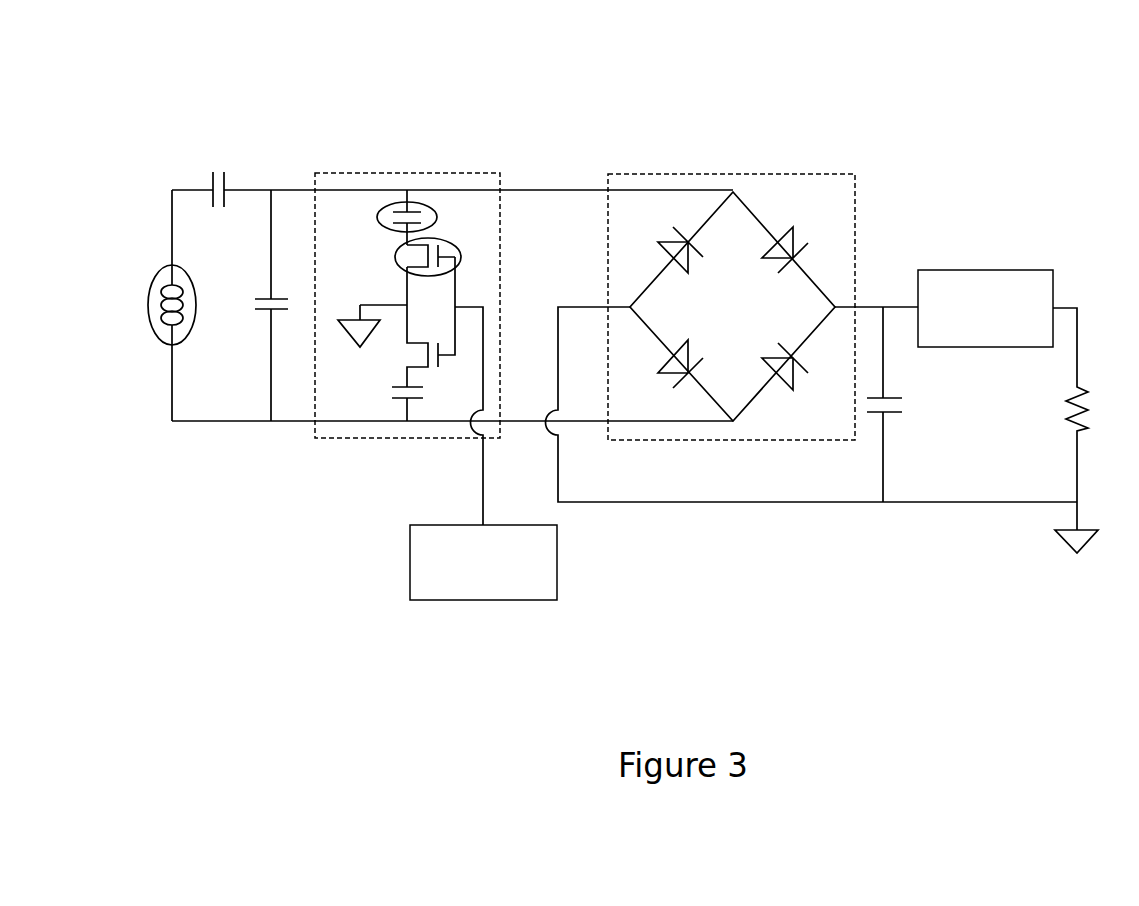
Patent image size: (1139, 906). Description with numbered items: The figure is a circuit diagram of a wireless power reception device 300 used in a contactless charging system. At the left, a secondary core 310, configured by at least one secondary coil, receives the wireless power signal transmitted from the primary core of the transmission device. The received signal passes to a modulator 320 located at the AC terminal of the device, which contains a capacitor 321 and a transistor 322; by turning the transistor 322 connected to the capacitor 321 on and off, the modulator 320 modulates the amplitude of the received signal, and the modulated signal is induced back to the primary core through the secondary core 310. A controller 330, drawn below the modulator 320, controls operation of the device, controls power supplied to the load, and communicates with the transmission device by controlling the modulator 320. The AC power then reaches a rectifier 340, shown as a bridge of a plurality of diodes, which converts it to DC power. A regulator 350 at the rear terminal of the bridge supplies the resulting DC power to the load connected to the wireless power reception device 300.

The wireless power reception device 300 is at (808, 90).
The secondary core 310 is at (148, 300).
The modulator 320 is at (463, 173).
The capacitor 321 is at (392, 203).
The transistor 322 is at (395, 257).
The controller 330 is at (530, 601).
The rectifier 340 is at (728, 174).
The regulator 350 is at (1022, 270).